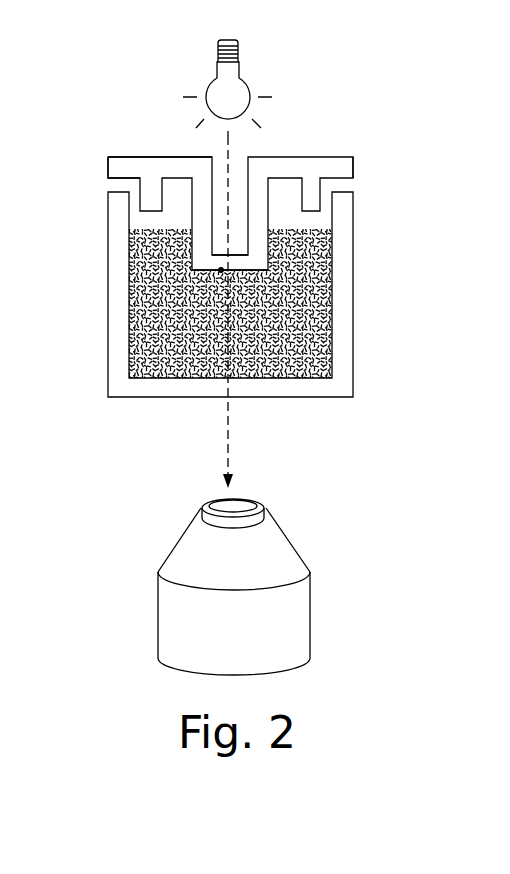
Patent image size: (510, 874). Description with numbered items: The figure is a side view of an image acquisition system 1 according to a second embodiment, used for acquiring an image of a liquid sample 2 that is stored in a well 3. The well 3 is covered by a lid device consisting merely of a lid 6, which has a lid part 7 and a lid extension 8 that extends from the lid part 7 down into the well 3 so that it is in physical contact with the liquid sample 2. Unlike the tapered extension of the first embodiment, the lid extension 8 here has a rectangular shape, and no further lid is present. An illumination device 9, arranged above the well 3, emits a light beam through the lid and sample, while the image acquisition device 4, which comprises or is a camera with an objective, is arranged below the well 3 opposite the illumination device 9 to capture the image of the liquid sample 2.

The image acquisition system 1 is at (385, 86).
The liquid sample 2 is at (148, 367).
The well 3 is at (118, 302).
The image acquisition device 4 is at (188, 633).
The lid 6 is at (321, 130).
The lid part 7 is at (157, 166).
The lid extension 8 is at (257, 223).
The illumination device 9 is at (233, 88).